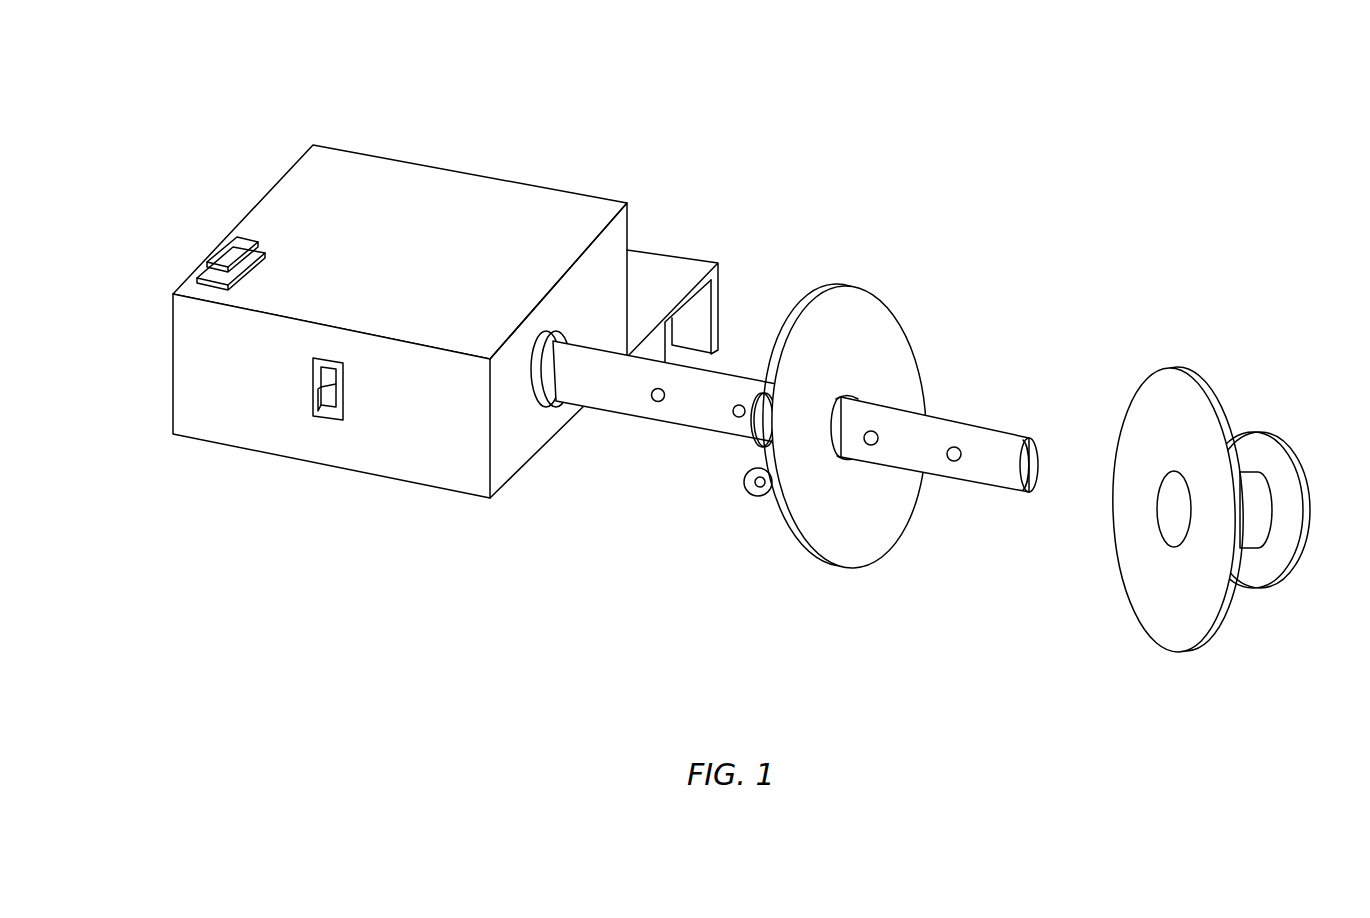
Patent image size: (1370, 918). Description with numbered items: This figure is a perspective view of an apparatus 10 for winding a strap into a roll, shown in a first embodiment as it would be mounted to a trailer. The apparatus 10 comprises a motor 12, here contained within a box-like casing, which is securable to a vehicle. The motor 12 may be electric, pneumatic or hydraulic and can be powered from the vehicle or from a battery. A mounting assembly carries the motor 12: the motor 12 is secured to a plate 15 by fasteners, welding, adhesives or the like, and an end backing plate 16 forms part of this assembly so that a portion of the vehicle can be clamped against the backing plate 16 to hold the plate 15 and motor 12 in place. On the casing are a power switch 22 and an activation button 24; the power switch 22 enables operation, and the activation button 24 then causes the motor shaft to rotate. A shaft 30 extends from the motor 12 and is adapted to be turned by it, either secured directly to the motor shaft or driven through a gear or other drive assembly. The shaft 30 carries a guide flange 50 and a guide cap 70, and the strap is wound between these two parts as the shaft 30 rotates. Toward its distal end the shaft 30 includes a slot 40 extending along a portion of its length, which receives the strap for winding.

The apparatus for winding a strap 10 is at (806, 172).
The motor 12 is at (460, 172).
The plate 15 is at (690, 258).
The end backing plate 16 is at (720, 313).
The power switch 22 is at (323, 415).
The activation button 24 is at (230, 244).
The shaft 30 is at (652, 417).
The slot 40 is at (943, 398).
The guide flange 50 is at (850, 287).
The guide cap 70 is at (1173, 368).